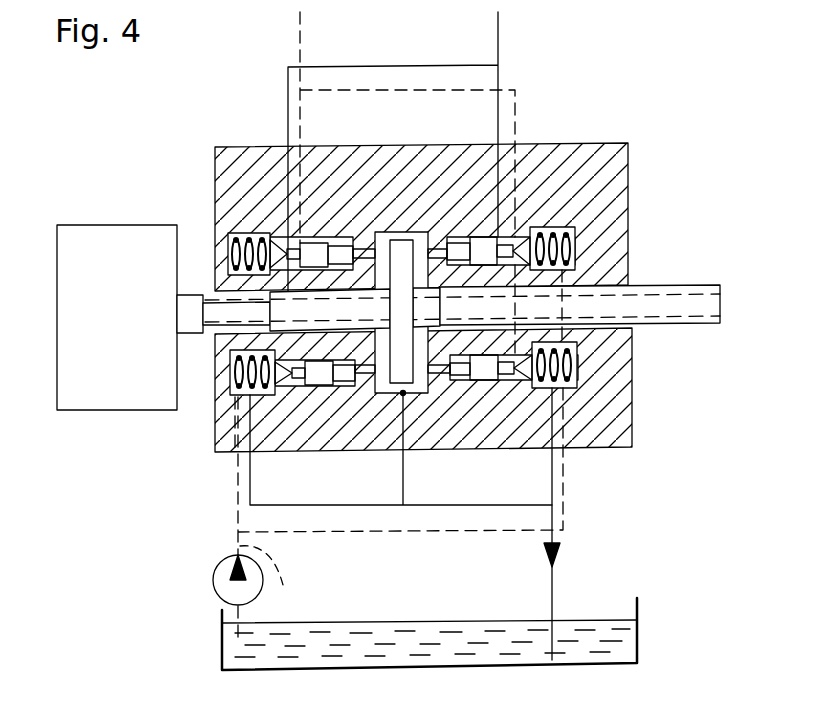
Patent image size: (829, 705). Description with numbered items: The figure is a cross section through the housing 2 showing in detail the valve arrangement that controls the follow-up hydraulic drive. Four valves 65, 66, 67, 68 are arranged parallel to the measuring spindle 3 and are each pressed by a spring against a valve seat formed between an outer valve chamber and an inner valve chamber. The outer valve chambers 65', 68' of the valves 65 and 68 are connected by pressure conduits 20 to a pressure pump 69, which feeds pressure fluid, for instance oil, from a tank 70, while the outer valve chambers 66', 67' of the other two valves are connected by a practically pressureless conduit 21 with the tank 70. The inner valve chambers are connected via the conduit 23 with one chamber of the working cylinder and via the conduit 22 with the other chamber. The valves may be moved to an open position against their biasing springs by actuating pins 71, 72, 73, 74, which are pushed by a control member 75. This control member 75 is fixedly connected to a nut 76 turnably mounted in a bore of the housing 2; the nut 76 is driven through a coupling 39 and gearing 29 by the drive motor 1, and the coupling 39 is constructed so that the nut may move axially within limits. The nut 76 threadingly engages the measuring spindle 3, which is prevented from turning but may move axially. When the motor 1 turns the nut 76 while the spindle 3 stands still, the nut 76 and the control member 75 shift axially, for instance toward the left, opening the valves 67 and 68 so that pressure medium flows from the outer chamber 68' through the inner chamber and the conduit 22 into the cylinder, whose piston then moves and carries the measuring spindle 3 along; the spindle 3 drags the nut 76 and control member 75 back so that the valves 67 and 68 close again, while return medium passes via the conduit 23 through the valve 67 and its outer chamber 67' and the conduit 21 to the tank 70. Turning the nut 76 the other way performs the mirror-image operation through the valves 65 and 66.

The drive motor 1 is at (94, 250).
The housing 2 is at (612, 402).
The measuring spindle 3 is at (680, 290).
The pressure conduit 20 is at (273, 582).
The pressureless conduit 21 is at (556, 537).
The conduit 22 is at (302, 52).
The conduit 23 is at (500, 40).
The gearing 29 is at (190, 300).
The coupling 39 is at (189, 336).
The valve 65 is at (535, 187).
The outer valve chamber 65' is at (595, 188).
The valve 66 is at (535, 418).
The outer valve chamber 66' is at (604, 363).
The valve 67 is at (292, 417).
The outer valve chamber 67' is at (242, 407).
The valve 68 is at (290, 195).
The outer valve chamber 68' is at (244, 187).
The pressure pump 69 is at (212, 582).
The tank 70 is at (400, 616).
The actuating pin 71 is at (455, 243).
The actuating pin 72 is at (452, 380).
The actuating pin 73 is at (379, 450).
The actuating pin 74 is at (368, 243).
The control member 75 is at (405, 240).
The nut 76 is at (497, 382).